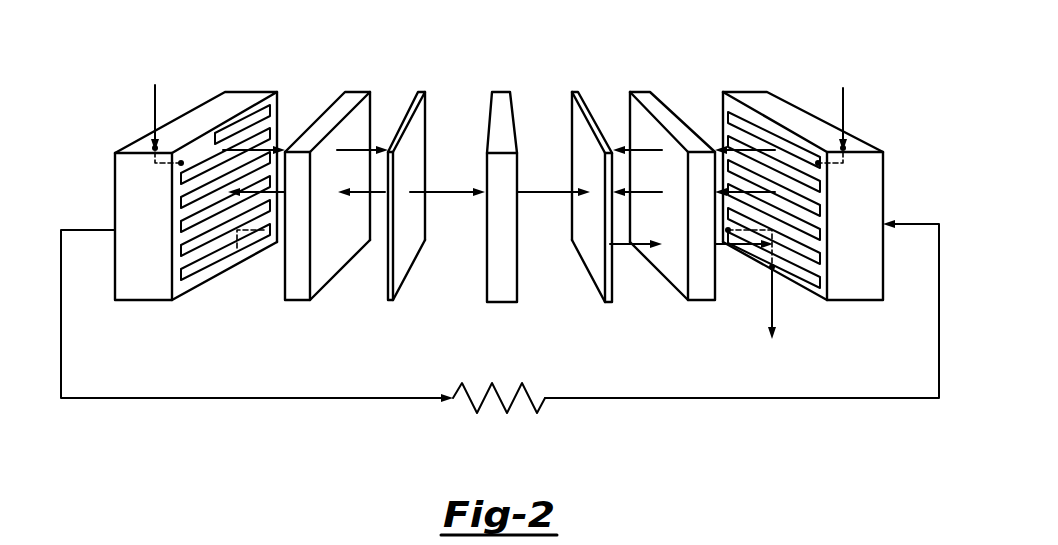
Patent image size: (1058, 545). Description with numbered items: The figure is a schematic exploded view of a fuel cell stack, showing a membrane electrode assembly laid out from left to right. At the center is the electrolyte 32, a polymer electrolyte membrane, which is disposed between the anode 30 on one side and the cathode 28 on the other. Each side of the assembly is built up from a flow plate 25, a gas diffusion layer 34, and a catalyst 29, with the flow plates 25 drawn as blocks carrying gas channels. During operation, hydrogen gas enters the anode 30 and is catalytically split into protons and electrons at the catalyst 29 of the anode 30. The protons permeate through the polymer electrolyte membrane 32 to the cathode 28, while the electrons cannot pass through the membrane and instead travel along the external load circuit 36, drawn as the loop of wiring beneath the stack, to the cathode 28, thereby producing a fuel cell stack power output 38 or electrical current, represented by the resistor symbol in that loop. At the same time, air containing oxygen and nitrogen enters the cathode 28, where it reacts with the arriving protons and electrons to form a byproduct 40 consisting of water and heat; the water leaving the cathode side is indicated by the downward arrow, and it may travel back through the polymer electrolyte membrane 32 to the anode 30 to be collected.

The flow plate 25 is at (140, 300).
The cathode 28 is at (890, 75).
The catalyst 29 is at (390, 300).
The anode 30 is at (433, 75).
The electrolyte 32 is at (500, 92).
The gas diffusion layer 34 is at (295, 300).
The external load circuit 36 is at (627, 399).
The fuel cell stack power output 38 is at (477, 413).
The byproduct 40 is at (823, 381).